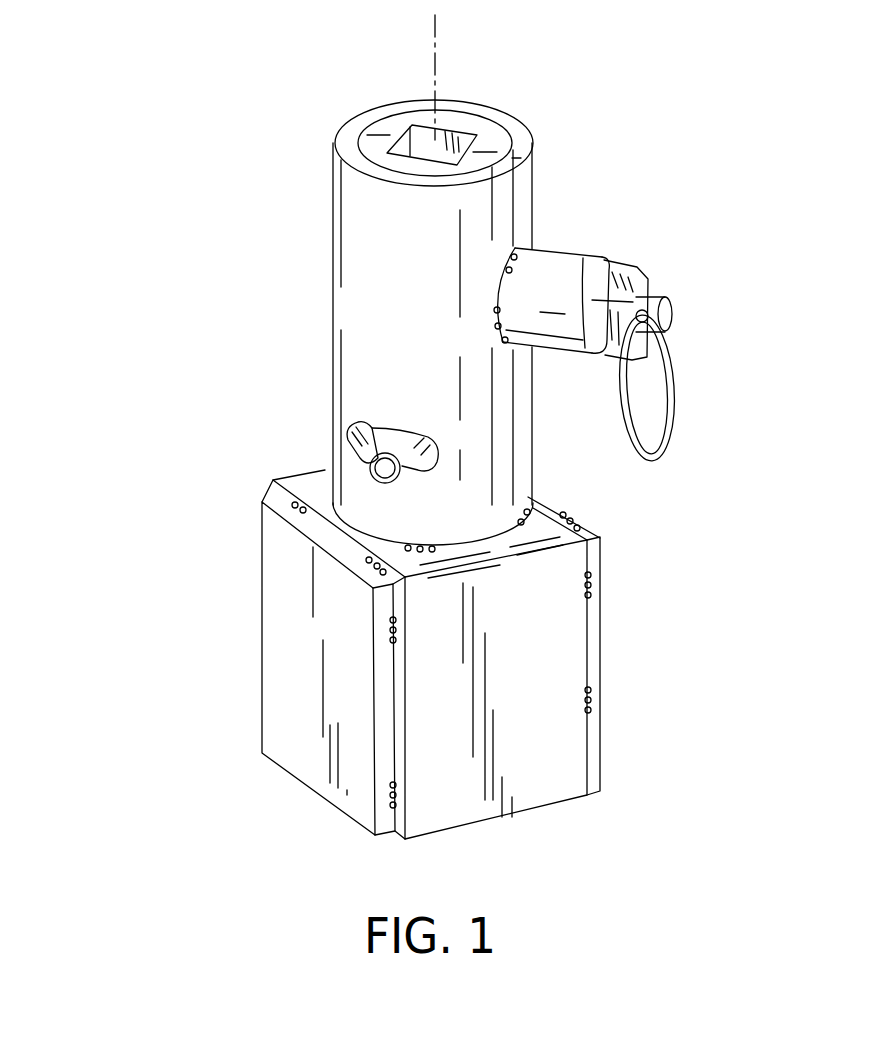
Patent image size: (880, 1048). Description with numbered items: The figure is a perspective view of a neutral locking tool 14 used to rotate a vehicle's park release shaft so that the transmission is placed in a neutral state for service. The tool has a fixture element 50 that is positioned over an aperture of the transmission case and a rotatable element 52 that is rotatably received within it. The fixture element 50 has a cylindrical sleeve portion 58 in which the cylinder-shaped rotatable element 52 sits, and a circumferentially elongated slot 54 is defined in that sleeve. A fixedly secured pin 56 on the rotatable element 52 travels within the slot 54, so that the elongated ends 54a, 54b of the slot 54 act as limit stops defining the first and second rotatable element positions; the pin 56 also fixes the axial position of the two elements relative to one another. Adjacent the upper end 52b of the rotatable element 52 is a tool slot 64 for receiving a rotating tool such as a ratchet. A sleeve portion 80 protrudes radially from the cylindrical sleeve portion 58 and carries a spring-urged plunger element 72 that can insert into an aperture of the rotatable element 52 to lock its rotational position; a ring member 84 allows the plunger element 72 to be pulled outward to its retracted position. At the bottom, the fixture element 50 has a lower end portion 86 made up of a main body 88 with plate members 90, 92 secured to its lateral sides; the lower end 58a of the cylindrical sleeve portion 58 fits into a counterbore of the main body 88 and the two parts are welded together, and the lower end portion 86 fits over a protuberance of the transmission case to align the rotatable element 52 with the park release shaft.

The neutral locking tool 14 is at (252, 338).
The fixture element 50 is at (618, 548).
The rotatable element 52 is at (487, 132).
The upper end 52b is at (467, 120).
The circumferentially elongated slot 54 is at (380, 430).
The elongated end of slot 54a is at (433, 472).
The elongated end of slot 54b is at (350, 448).
The fixedly secured pin 56 is at (385, 475).
The cylindrical sleeve portion 58 is at (508, 208).
The lower end of cylindrical sleeve portion 58a is at (480, 527).
The tool slot 64 is at (420, 138).
The plunger element 72 is at (660, 298).
The sleeve portion 80 is at (582, 262).
The ring member 84 is at (665, 420).
The lower end portion 86 is at (597, 667).
The main body 88 is at (530, 783).
The plate member 90 is at (312, 752).
The plate member 92 is at (600, 753).